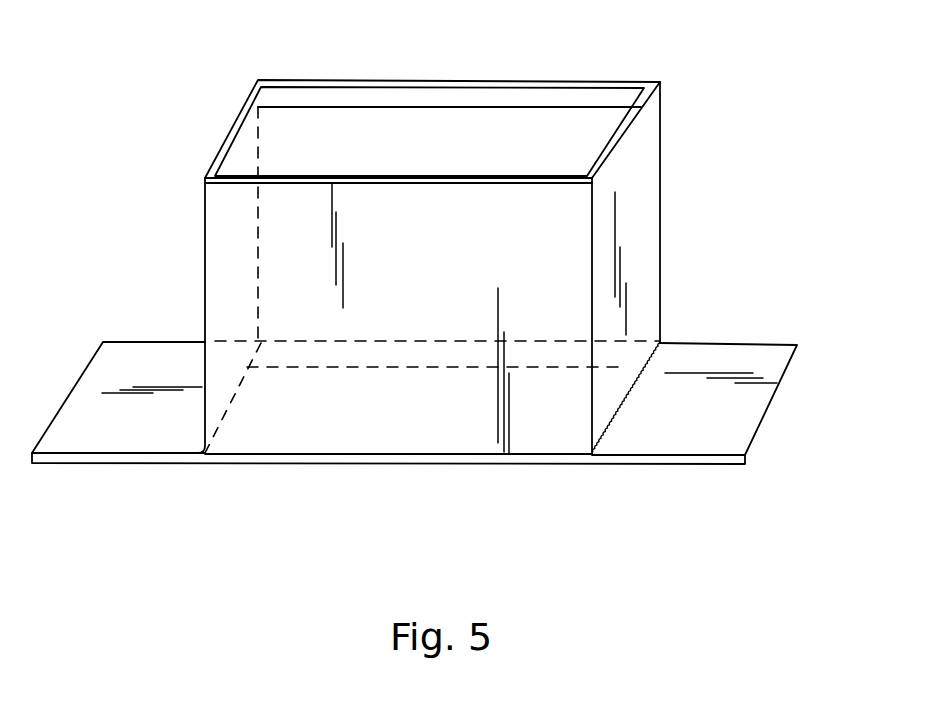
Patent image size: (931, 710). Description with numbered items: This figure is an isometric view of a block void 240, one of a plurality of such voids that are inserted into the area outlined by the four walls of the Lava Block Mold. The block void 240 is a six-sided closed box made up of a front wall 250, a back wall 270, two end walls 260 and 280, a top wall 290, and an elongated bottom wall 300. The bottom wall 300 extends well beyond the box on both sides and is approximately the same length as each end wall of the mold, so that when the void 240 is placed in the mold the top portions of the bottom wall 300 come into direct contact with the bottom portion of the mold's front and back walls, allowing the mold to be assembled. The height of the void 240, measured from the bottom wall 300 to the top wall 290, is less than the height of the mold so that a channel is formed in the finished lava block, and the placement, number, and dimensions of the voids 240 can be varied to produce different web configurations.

The block void 240 is at (643, 102).
The front wall 250 is at (300, 422).
The end wall 260 is at (640, 217).
The back wall 270 is at (338, 108).
The end wall 280 is at (205, 265).
The top wall 290 is at (428, 138).
The elongated bottom wall 300 is at (708, 435).